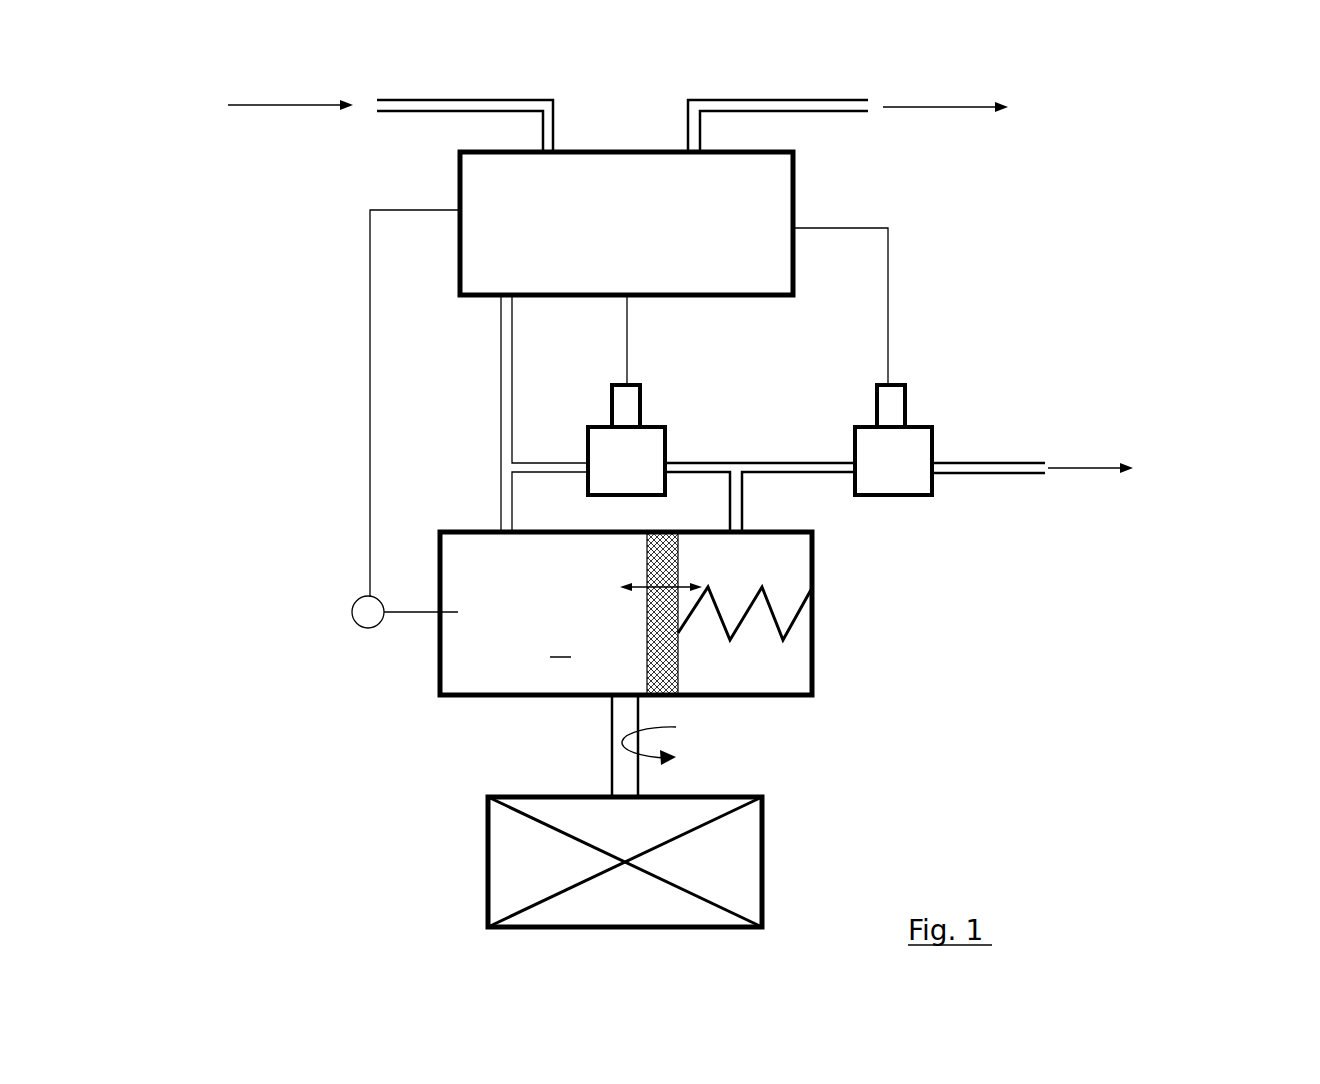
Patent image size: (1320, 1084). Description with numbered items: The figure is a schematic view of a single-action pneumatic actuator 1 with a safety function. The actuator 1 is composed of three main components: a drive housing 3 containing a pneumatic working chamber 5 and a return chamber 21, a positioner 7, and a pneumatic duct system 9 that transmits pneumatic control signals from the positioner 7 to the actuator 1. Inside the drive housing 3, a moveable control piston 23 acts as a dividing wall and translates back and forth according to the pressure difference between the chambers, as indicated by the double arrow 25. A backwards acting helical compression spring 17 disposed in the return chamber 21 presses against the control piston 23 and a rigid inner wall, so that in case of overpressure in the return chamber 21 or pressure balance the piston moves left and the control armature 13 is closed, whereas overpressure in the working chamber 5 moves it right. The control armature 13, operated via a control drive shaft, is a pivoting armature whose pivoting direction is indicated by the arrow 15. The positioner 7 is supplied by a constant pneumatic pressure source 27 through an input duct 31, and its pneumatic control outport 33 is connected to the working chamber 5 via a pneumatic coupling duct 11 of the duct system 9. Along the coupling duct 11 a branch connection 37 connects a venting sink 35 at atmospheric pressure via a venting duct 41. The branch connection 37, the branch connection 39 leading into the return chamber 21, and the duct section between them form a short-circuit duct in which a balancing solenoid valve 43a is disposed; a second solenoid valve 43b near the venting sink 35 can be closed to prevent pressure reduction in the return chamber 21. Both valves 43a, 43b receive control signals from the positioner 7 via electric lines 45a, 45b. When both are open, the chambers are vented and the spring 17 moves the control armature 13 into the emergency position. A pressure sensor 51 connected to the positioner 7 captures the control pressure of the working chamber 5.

The pneumatic actuator 1 is at (1020, 210).
The drive housing 3 is at (442, 695).
The pneumatic working chamber 5 is at (532, 619).
The positioner 7 is at (793, 180).
The pneumatic duct system 9 is at (410, 517).
The pneumatic coupling duct 11 is at (510, 367).
The control armature 13 is at (762, 843).
The arrow 15 is at (676, 757).
The helical compression spring 17 is at (802, 600).
The return chamber 21 is at (787, 668).
The control piston 23 is at (662, 663).
The double arrow 25 is at (810, 567).
The pneumatic pressure source 27 is at (278, 105).
The input duct 31 is at (405, 100).
The pneumatic control outport 33 is at (460, 285).
The venting sink 35 is at (955, 105).
The branch connection 37 is at (507, 465).
The branch connection 39 is at (735, 463).
The venting duct 41 is at (777, 472).
The solenoid valve 43a is at (630, 455).
The solenoid valve 43b is at (890, 457).
The electric line 45a is at (633, 327).
The electric line 45b is at (888, 270).
The pressure sensor 51 is at (362, 620).